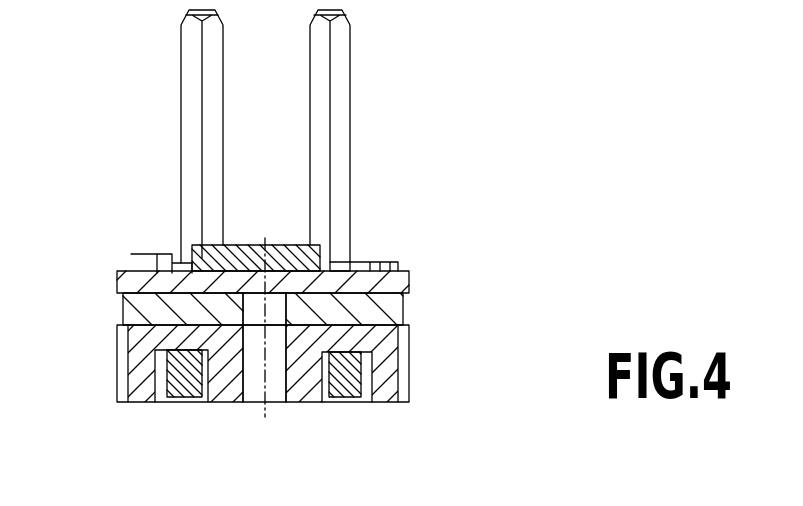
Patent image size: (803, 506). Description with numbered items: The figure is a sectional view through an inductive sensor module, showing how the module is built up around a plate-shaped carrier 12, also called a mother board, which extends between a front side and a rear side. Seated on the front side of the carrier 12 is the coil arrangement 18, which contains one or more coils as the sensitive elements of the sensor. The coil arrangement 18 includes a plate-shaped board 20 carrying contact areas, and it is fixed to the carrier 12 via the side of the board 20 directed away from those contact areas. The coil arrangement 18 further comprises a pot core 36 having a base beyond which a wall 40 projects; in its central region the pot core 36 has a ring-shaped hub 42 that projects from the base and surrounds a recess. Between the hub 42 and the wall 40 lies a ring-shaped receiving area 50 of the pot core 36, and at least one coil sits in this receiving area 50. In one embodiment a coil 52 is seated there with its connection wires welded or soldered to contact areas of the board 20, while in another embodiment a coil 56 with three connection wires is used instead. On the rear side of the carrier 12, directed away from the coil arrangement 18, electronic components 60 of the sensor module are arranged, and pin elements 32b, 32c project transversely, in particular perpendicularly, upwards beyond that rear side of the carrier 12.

The carrier 12 is at (398, 283).
The coil arrangement 18 is at (96, 322).
The board 20 is at (380, 300).
The pin element 32b is at (320, 62).
The pin element 32c is at (193, 56).
The pot core 36 is at (385, 343).
The wall 40 is at (387, 388).
The hub 42 is at (302, 378).
The receiving area 50 is at (164, 375).
The coil 52 is at (203, 372).
The coil 56 is at (264, 327).
The electronic components 60 is at (287, 243).